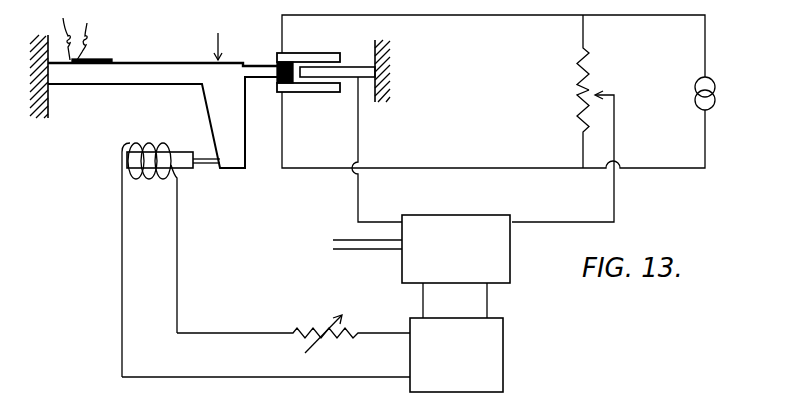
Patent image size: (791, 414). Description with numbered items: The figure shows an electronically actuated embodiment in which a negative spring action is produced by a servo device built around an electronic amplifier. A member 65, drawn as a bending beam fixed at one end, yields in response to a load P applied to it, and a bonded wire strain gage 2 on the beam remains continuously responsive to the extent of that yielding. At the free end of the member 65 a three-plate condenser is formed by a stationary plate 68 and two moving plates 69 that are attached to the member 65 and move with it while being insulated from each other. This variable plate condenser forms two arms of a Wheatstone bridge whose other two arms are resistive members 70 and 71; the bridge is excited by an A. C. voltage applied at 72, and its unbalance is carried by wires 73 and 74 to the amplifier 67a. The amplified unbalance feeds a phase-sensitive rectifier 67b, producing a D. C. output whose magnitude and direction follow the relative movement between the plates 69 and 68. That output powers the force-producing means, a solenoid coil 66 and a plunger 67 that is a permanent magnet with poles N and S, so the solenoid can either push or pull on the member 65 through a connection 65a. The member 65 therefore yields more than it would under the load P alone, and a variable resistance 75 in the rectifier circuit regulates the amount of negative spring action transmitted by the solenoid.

The bonded wire strain gage 2 is at (94, 59).
The member 65 is at (164, 63).
The connection 65a is at (207, 157).
The solenoid coil 66 is at (139, 142).
The plunger 67 is at (186, 170).
The amplifier 67a is at (512, 256).
The phase-sensitive rectifier 67b is at (507, 352).
The stationary plate 68 is at (350, 67).
The moving plates 69 is at (318, 53).
The resistive member 70 is at (578, 74).
The resistive member 71 is at (578, 116).
The A. C. voltage source 72 is at (719, 93).
The wire 73 is at (365, 192).
The wire 74 is at (612, 192).
The variable resistance 75 is at (320, 330).
The load P is at (217, 39).